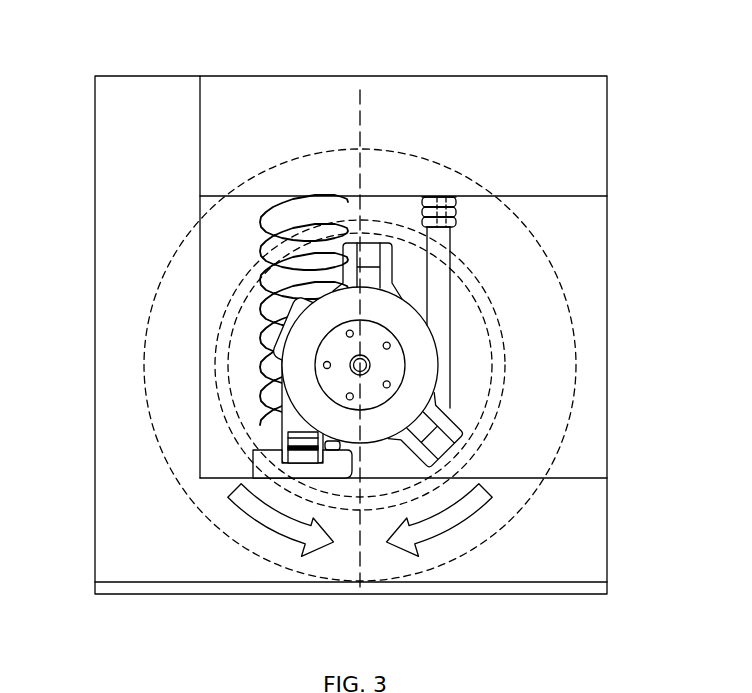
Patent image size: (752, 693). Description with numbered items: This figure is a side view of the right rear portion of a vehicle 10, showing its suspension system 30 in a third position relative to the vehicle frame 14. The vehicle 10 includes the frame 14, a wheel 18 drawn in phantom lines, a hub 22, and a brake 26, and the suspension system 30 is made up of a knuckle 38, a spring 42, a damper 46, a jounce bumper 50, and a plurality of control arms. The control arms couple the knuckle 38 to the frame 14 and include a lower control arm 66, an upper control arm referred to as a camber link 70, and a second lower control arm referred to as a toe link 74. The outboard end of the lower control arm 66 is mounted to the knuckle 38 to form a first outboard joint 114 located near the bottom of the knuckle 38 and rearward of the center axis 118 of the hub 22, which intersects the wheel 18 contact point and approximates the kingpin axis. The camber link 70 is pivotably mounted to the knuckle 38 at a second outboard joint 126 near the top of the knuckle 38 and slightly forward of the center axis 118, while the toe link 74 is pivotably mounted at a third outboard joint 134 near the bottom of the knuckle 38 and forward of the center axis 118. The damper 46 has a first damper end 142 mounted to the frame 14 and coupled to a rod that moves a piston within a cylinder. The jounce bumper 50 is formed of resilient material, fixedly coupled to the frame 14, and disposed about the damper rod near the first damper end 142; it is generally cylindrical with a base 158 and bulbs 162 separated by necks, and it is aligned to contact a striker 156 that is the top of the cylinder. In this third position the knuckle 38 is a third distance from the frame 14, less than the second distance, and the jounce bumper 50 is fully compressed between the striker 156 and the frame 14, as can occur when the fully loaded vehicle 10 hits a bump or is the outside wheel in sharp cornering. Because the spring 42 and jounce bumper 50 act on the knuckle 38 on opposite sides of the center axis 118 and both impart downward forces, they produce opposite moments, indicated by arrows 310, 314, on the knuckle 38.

The vehicle 10 is at (150, 105).
The vehicle frame 14 is at (217, 88).
The wheel 18 is at (140, 350).
The hub 22 is at (370, 402).
The brake 26 is at (298, 333).
The suspension system 30 is at (210, 178).
The knuckle 38 is at (300, 420).
The spring 42 is at (273, 217).
The damper 46 is at (460, 366).
The jounce bumper 50 is at (428, 197).
The lower control arm 66 is at (255, 467).
The camber link 70 is at (374, 243).
The toe link 74 is at (442, 442).
The first outboard joint 114 is at (298, 457).
The center axis 118 is at (363, 558).
The second outboard joint 126 is at (365, 258).
The third outboard joint 134 is at (440, 438).
The first damper end 142 is at (440, 197).
The striker 156 is at (452, 229).
The base 158 is at (456, 199).
The bulbs 162 is at (457, 224).
The arrow 310 is at (270, 532).
The arrow 314 is at (473, 515).